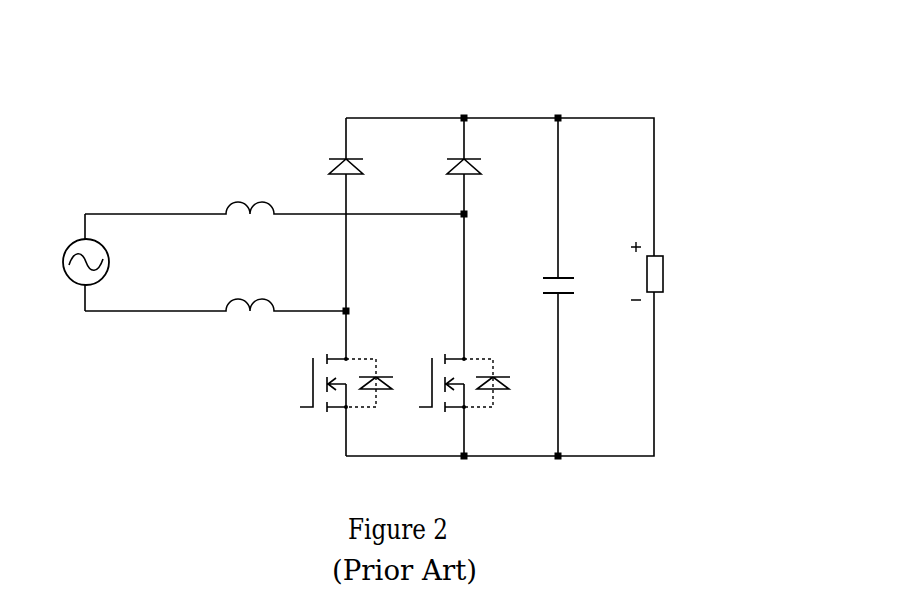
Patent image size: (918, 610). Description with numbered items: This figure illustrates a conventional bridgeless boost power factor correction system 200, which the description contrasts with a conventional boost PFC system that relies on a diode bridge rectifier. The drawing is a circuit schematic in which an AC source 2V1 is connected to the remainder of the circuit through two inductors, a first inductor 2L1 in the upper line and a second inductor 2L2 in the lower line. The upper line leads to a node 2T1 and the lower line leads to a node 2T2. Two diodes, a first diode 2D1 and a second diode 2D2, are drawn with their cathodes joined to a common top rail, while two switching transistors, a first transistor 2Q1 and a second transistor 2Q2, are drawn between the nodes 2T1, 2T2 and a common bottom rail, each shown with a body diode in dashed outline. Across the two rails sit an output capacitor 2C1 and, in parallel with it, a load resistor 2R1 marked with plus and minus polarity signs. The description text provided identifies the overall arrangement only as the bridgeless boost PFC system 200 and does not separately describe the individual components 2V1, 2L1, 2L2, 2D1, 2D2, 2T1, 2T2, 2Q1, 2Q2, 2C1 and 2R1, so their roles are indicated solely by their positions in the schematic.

The bridgeless boost PFC system 200 is at (684, 123).
The AC source 2V1 is at (62, 281).
The first inductor 2L1 is at (274, 193).
The second inductor 2L2 is at (215, 290).
The first diode 2D1 is at (364, 161).
The second diode 2D2 is at (486, 161).
The first terminal node 2T1 is at (486, 214).
The second terminal node 2T2 is at (370, 311).
The first switching transistor 2Q1 is at (345, 396).
The second switching transistor 2Q2 is at (463, 397).
The output capacitor 2C1 is at (579, 280).
The load resistor 2R1 is at (683, 269).